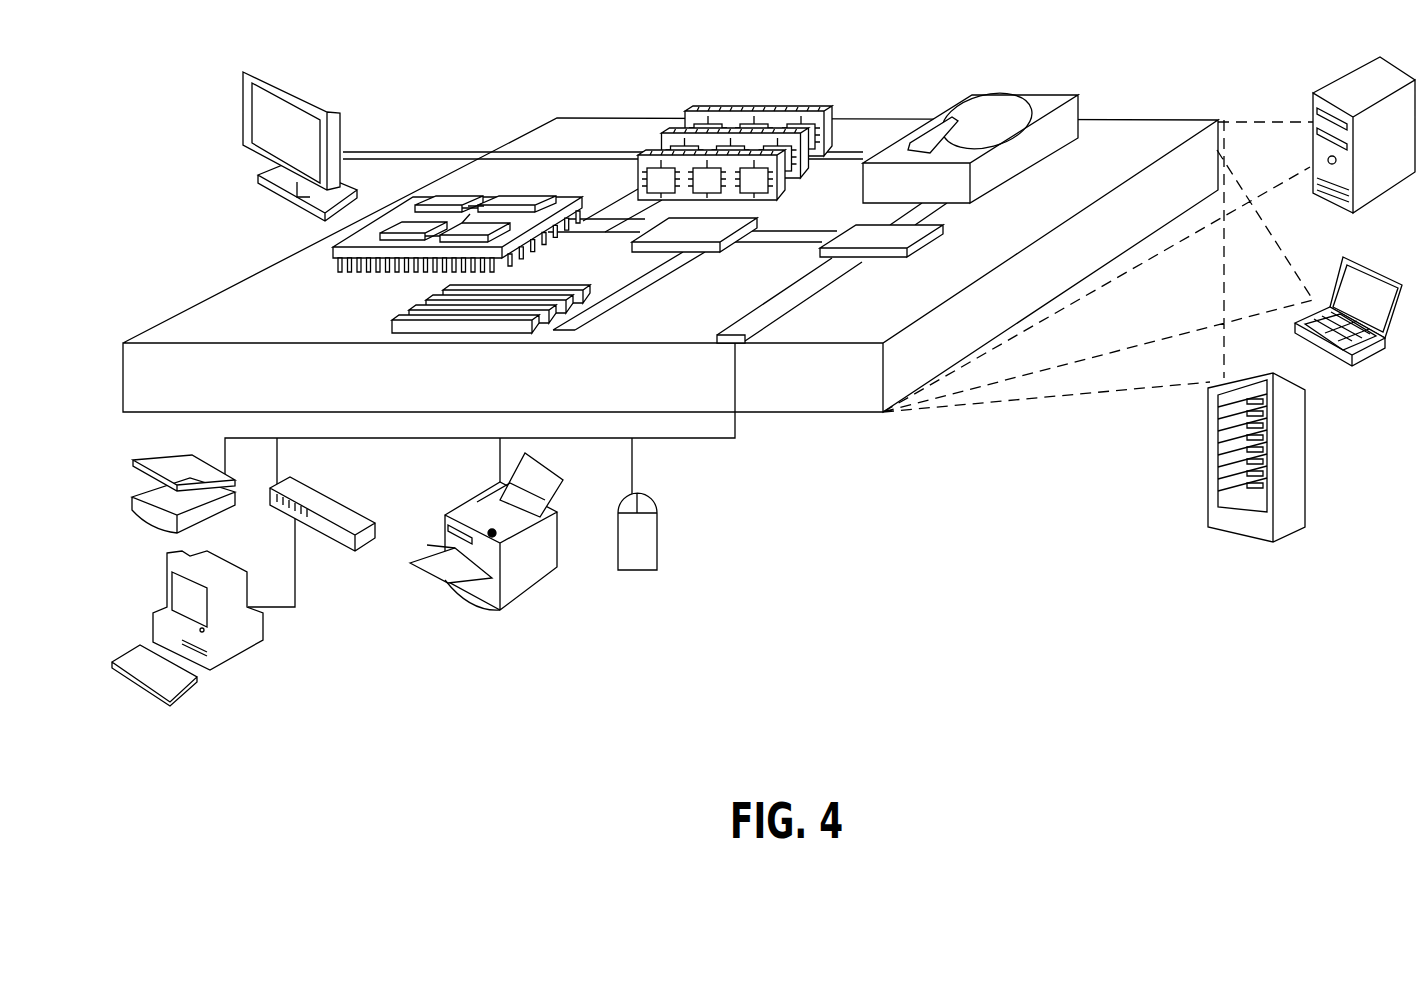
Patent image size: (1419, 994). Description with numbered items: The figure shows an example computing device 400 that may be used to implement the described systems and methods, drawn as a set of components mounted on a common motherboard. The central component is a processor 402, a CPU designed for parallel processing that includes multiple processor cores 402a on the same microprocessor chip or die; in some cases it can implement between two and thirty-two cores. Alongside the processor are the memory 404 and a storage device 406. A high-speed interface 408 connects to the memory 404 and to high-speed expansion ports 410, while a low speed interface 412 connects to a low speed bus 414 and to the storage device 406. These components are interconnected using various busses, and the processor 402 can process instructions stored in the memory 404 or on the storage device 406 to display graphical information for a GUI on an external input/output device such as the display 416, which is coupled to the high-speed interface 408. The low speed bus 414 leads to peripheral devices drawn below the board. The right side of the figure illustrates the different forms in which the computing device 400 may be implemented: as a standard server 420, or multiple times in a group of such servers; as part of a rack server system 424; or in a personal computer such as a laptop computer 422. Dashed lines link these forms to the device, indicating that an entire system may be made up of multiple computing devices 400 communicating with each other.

The computing device 400 is at (471, 77).
The processor 402 is at (333, 258).
The processor cores 402a is at (450, 203).
The memory 404 is at (703, 111).
The storage device 406 is at (963, 95).
The high-speed interface 408 is at (667, 233).
The high-speed expansion ports 410 is at (405, 300).
The low speed interface 412 is at (880, 240).
The low speed bus 414 is at (747, 344).
The display 416 is at (243, 72).
The standard server 420 is at (1313, 100).
The laptop computer 422 is at (1345, 258).
The rack server system 424 is at (1208, 480).